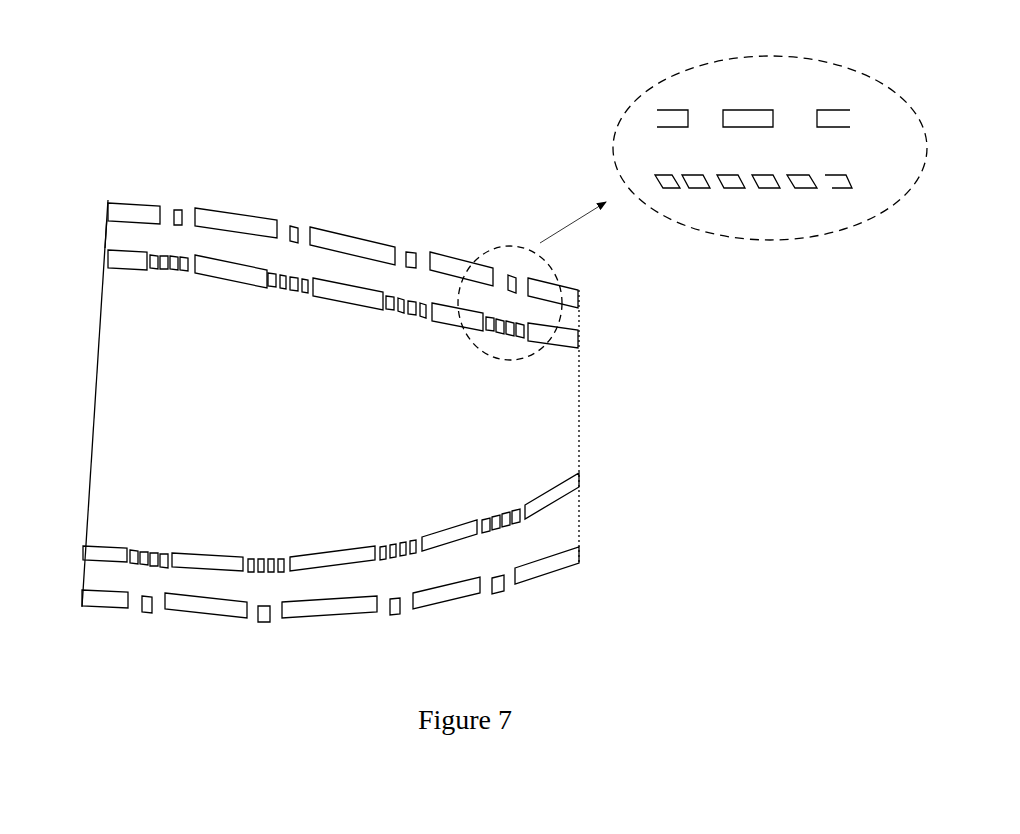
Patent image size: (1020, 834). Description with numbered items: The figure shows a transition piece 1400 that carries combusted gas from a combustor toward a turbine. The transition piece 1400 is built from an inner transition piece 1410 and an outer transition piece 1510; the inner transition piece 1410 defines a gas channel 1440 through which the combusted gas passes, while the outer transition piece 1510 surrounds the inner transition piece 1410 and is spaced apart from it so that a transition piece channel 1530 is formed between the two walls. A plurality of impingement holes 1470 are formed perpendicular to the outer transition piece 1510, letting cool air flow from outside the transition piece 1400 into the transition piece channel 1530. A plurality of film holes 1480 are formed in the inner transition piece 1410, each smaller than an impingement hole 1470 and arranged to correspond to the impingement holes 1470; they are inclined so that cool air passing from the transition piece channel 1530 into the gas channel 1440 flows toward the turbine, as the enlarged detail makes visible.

The transition piece 1400 is at (123, 104).
The inner transition piece 1410 is at (113, 257).
The gas channel 1440 is at (305, 449).
The impingement holes 1470 is at (281, 227).
The film holes 1480 is at (302, 294).
The outer transition piece 1510 is at (128, 212).
The transition piece channel 1530 is at (120, 238).